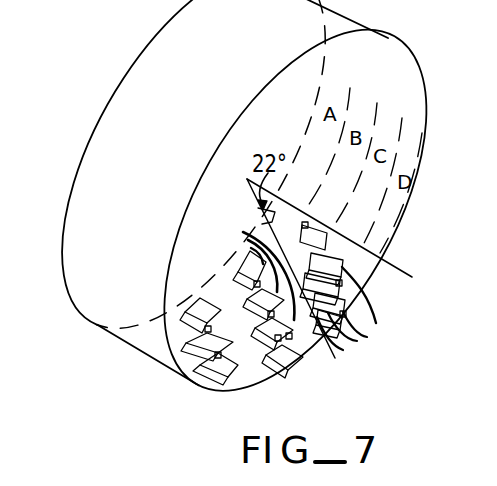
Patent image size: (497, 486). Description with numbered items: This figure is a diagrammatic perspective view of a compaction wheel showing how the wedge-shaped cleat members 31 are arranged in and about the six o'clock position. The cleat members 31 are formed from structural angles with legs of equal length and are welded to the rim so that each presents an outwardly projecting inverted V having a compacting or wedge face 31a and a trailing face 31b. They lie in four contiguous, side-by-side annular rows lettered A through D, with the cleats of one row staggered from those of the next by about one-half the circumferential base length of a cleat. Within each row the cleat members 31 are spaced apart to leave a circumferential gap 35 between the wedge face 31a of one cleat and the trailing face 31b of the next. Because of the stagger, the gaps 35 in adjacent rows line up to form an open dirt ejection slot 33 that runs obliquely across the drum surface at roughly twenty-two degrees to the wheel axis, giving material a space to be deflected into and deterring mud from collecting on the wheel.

The cleat member 31 is at (318, 254).
The compacting or wedge face 31a is at (352, 305).
The trailing face 31b is at (246, 236).
The dirt ejection slot 33 is at (242, 335).
The circumferential gap 35 is at (222, 271).